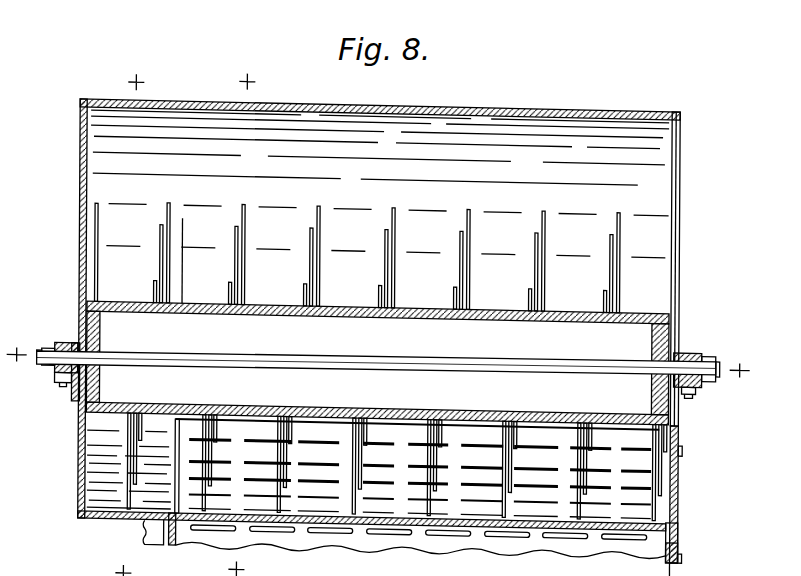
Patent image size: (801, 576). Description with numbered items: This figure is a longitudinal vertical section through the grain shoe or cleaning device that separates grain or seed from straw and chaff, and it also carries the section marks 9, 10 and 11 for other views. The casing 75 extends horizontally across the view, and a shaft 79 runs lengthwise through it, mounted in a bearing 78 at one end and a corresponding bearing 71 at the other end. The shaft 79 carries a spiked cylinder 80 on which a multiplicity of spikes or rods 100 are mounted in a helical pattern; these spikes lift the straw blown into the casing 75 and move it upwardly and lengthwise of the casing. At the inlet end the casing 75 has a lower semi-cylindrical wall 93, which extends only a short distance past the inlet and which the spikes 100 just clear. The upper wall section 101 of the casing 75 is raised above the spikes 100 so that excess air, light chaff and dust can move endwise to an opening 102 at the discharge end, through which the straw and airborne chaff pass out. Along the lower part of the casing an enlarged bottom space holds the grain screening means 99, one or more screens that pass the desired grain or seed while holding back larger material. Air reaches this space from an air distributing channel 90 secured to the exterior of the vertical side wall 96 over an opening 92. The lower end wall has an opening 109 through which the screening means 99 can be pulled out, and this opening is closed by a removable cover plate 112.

The section line 9- 9 is at (378, 352).
The section line 10- 10 is at (251, 324).
The section line 11- 11 is at (121, 324).
The left shaft bearing flange 71 is at (63, 349).
The casing 75 is at (535, 105).
The bearing 78 is at (690, 349).
The shaft 79 is at (417, 371).
The spiked cylinder 80 is at (411, 351).
The air distributing channel 90 is at (157, 543).
The opening 92 is at (508, 534).
The lower semi-cylindrical wall 93 is at (108, 507).
The vertical side wall 96 is at (627, 544).
The grain screening means 99 is at (300, 438).
The spikes or rods 100 is at (391, 222).
The upper wall section 101 is at (457, 122).
The opening 102 is at (672, 249).
The opening 109 is at (669, 421).
The removable cover plate 112 is at (677, 488).